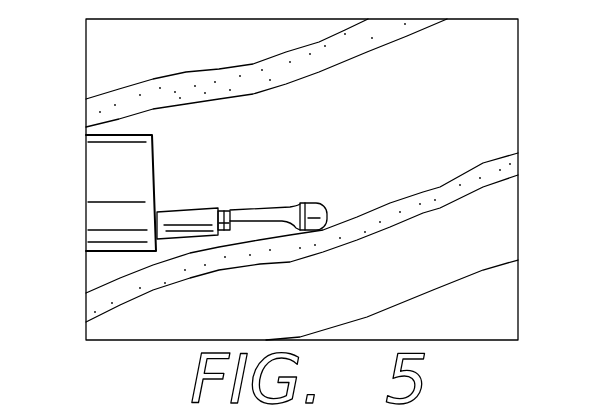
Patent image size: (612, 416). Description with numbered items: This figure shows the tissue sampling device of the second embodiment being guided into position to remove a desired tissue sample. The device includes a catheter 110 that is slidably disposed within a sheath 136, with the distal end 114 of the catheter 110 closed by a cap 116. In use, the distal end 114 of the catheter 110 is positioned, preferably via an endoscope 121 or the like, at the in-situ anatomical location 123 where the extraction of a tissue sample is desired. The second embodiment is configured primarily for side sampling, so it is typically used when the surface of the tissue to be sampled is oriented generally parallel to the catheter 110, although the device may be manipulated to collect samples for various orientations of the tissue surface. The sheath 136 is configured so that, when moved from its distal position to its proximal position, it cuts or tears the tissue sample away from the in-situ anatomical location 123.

The catheter 110 is at (257, 208).
The distal end 114 is at (270, 175).
The cap 116 is at (314, 202).
The endoscope 121 is at (90, 178).
The in-situ anatomical location 123 is at (516, 175).
The sheath 136 is at (180, 212).